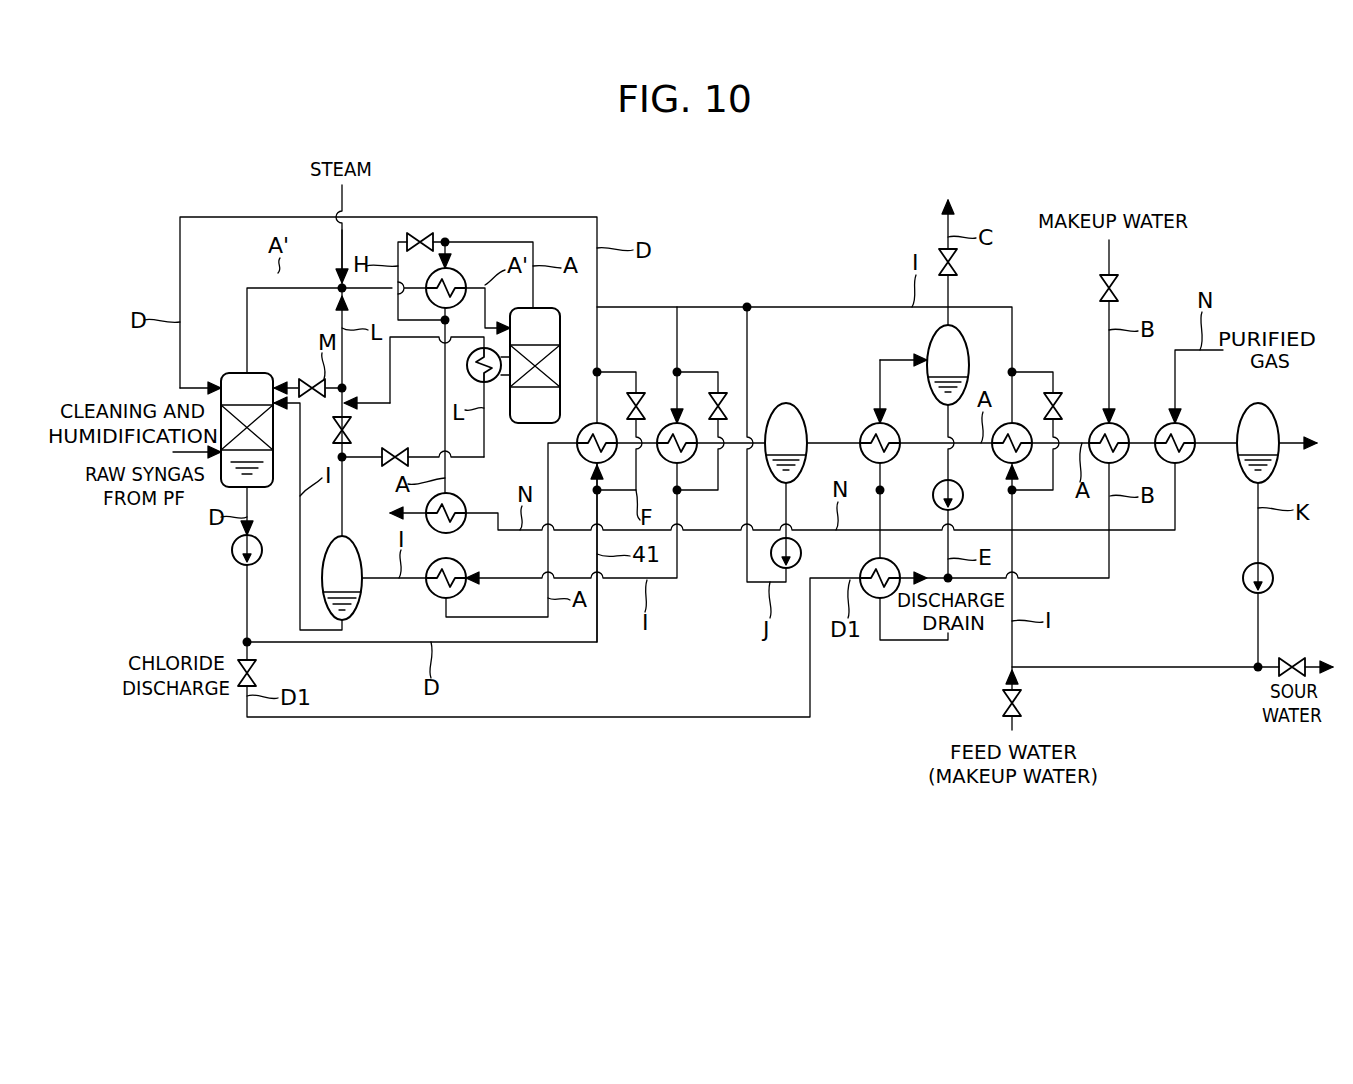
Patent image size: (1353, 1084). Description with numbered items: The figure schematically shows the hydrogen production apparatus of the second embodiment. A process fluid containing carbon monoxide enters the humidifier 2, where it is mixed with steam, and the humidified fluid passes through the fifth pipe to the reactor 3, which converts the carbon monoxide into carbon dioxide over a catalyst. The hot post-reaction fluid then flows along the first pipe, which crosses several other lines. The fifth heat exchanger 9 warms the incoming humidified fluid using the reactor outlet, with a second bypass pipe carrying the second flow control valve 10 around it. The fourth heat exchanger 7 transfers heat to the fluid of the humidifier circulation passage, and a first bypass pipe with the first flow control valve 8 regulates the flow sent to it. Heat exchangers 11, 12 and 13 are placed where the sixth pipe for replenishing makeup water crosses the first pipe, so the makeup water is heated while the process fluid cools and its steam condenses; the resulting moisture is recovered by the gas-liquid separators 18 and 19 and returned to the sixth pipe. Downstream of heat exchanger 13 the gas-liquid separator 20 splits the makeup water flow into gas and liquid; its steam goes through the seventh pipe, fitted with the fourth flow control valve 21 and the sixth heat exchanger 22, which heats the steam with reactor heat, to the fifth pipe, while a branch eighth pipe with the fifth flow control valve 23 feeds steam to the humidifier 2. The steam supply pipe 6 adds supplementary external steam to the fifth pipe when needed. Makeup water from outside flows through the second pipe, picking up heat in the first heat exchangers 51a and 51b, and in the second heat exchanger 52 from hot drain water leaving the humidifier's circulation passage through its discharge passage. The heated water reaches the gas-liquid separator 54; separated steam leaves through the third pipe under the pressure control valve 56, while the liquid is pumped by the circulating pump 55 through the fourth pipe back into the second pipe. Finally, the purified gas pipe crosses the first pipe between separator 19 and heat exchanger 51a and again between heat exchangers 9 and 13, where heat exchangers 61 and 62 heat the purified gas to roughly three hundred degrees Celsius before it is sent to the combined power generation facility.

The humidifier 2 is at (256, 373).
The reactor 3 is at (567, 335).
The steam supply pipe 6 is at (342, 246).
The fourth heat exchanger 7 is at (584, 462).
The first flow control valve 8 is at (640, 392).
The fifth heat exchanger 9 is at (454, 272).
The second flow control valve 10 is at (407, 242).
The heat exchanger 11 is at (1021, 423).
The heat exchanger 12 is at (690, 423).
The heat exchanger 13 is at (454, 562).
The gas-liquid separator 18 is at (790, 403).
The gas-liquid separator 19 is at (1278, 410).
The gas-liquid separator 20 is at (356, 539).
The fourth flow control valve 21 is at (397, 454).
The sixth heat exchanger 22 is at (498, 384).
The fifth flow control valve 23 is at (322, 402).
The first heat exchanger 51a is at (1126, 424).
The first heat exchanger 51b is at (890, 421).
The second heat exchanger 52 is at (897, 562).
The gas-liquid separator 54 is at (927, 338).
The circulating pump 55 is at (933, 503).
The pressure control valve 56 is at (957, 268).
The heat exchanger 61 is at (1192, 423).
The heat exchanger 62 is at (460, 500).